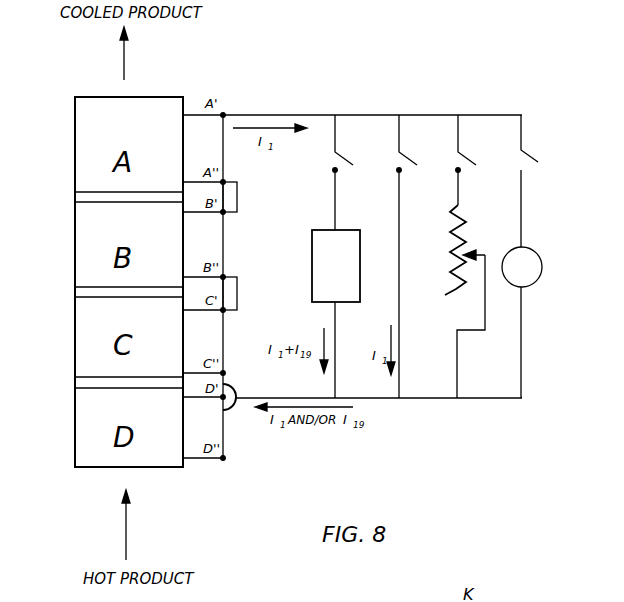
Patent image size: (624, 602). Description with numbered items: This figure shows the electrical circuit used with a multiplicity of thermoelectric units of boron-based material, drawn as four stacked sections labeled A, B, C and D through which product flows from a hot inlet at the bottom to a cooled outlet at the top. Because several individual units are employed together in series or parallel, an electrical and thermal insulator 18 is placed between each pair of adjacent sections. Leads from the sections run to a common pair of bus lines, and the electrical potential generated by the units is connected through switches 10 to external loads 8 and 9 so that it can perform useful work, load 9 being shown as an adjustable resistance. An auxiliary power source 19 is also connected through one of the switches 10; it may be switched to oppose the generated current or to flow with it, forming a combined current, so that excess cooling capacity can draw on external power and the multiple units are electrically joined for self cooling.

The electrical and thermal insulator 18 is at (75, 200).
The switch 10 is at (420, 143).
The power source 19 is at (336, 266).
The external load 9 is at (456, 301).
The external load 8 is at (522, 322).